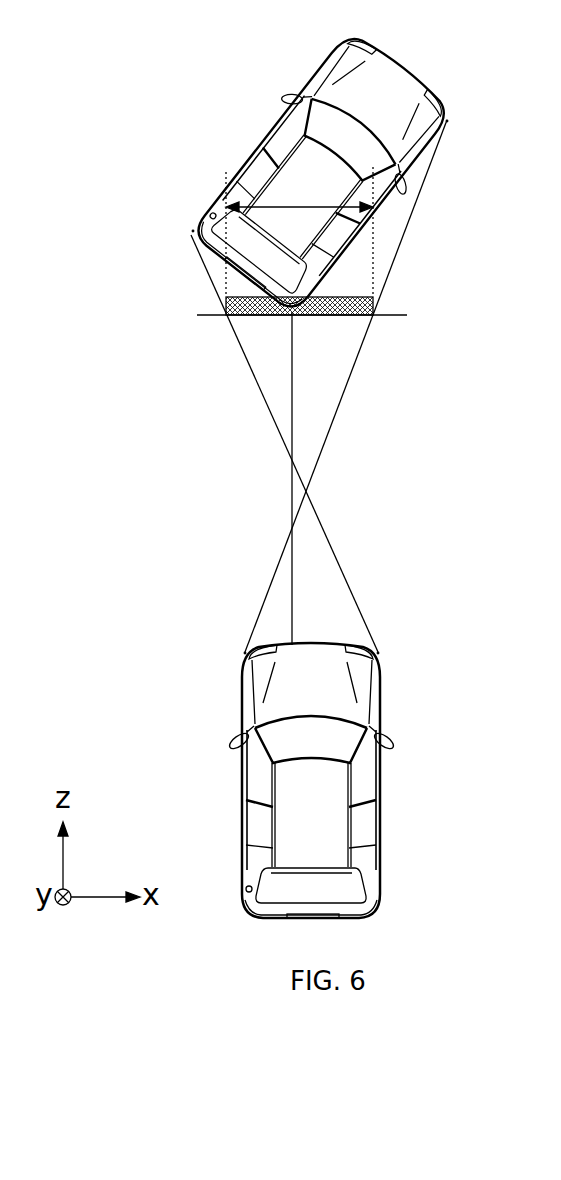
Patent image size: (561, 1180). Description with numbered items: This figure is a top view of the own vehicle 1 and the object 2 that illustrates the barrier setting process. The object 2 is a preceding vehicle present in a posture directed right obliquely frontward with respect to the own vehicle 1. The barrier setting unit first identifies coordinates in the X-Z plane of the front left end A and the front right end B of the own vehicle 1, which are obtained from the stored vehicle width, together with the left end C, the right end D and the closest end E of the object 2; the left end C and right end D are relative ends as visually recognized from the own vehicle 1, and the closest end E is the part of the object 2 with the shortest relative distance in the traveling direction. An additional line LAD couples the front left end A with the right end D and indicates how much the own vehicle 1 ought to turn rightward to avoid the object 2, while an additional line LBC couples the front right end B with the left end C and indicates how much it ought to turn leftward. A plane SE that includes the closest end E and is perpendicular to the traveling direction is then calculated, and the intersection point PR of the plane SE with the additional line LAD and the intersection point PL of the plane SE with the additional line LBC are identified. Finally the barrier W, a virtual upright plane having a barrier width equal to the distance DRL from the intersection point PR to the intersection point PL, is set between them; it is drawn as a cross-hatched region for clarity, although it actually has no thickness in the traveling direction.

The own vehicle 1 is at (383, 725).
The object 2 is at (404, 64).
The front left end A is at (244, 654).
The front right end B is at (379, 654).
The left end C is at (192, 232).
The right end D is at (448, 122).
The closest end E is at (293, 318).
The barrier W is at (337, 298).
The plane SE is at (380, 314).
The intersection point PL is at (227, 315).
The intersection point PR is at (374, 316).
The distance DRL is at (299, 195).
The additional line LAD is at (284, 550).
The additional line LBC is at (333, 550).